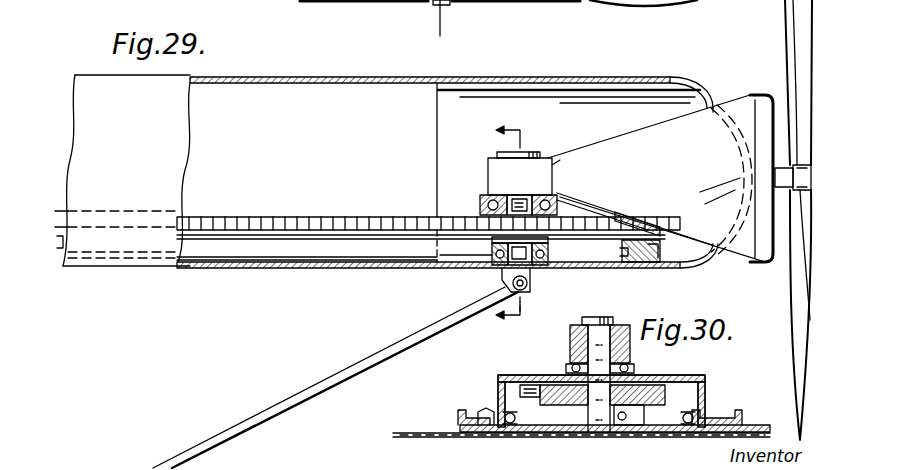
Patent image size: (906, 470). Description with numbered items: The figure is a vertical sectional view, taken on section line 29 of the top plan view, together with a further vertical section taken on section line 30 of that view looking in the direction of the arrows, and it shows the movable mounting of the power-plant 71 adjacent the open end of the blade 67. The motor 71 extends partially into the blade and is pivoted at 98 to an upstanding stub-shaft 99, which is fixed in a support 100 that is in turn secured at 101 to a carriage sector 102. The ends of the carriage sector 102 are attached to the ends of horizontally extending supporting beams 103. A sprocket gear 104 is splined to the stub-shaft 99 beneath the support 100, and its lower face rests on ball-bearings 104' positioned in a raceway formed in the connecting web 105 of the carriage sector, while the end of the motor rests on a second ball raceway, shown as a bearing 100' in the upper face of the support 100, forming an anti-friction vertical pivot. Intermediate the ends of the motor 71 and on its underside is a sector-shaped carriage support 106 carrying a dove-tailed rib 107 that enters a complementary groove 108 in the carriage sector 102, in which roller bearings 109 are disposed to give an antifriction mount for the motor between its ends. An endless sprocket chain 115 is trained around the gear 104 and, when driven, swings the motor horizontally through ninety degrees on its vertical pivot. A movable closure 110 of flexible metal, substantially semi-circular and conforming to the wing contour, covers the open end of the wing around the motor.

In FIG. 29, the section line 29 is at (440, 23).
In FIG. 29, the section line 30 is at (510, 216).
In FIG. 29, the blade 67 is at (437, 82).
In FIG. 29, the power-plant 71 is at (755, 95).
In FIG. 29, the pivot 98 is at (488, 174).
In FIG. 29, the stub-shaft 99 is at (492, 158).
In FIG. 30, the stub-shaft 99 is at (596, 345).
In FIG. 29, the support 100 is at (501, 200).
In FIG. 30, the support 100 is at (613, 386).
In FIG. 29, the bearing 100' is at (578, 178).
In FIG. 30, the bearing 100' is at (577, 358).
In FIG. 30, the securing point 101 is at (496, 432).
In FIG. 30, the carriage sector 102 is at (462, 420).
In FIG. 29, the supporting beams 103 is at (378, 260).
In FIG. 29, the sprocket gear 104 is at (634, 202).
In FIG. 30, the sprocket gear 104 is at (526, 423).
In FIG. 29, the ball-bearings 104' is at (350, 352).
In FIG. 30, the ball-bearings 104' is at (637, 433).
In FIG. 30, the connecting web 105 is at (548, 432).
In FIG. 29, the carriage support 106 is at (634, 217).
In FIG. 29, the dove-tailed rib 107 is at (680, 263).
In FIG. 29, the groove 108 is at (640, 260).
In FIG. 30, the groove 108 is at (480, 410).
In FIG. 29, the roller bearings 109 is at (654, 263).
In FIG. 30, the roller bearings 109 is at (728, 410).
In FIG. 29, the movable closure 110 is at (655, 78).
In FIG. 29, the endless sprocket chain 115 is at (250, 217).